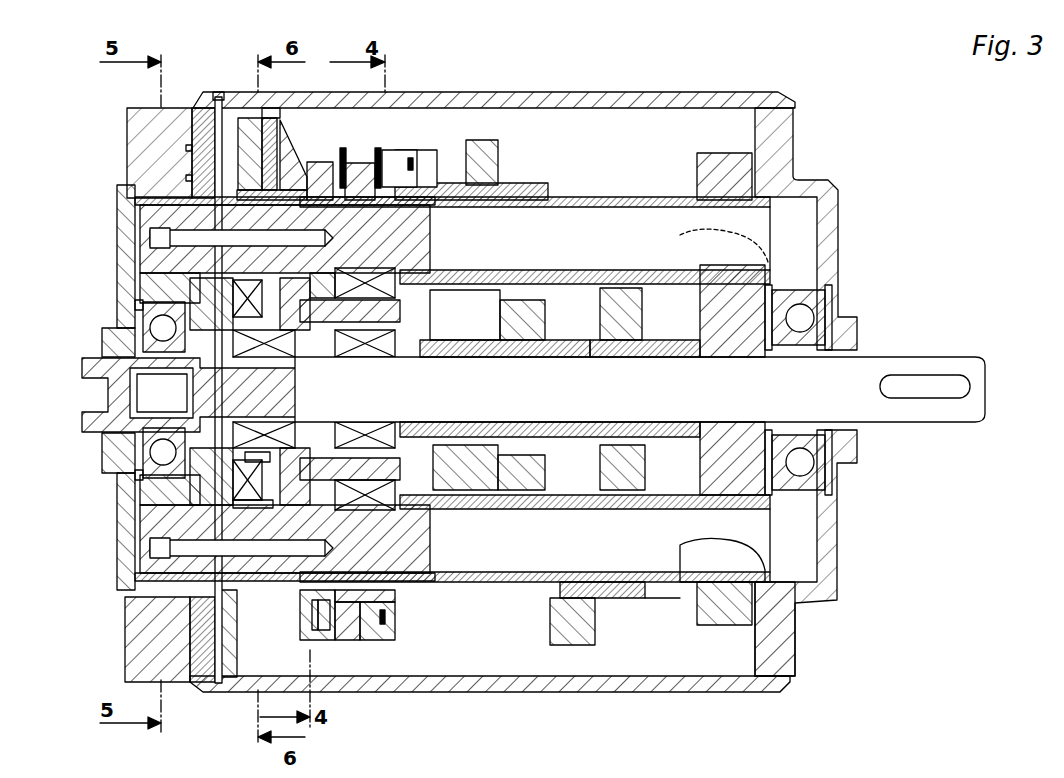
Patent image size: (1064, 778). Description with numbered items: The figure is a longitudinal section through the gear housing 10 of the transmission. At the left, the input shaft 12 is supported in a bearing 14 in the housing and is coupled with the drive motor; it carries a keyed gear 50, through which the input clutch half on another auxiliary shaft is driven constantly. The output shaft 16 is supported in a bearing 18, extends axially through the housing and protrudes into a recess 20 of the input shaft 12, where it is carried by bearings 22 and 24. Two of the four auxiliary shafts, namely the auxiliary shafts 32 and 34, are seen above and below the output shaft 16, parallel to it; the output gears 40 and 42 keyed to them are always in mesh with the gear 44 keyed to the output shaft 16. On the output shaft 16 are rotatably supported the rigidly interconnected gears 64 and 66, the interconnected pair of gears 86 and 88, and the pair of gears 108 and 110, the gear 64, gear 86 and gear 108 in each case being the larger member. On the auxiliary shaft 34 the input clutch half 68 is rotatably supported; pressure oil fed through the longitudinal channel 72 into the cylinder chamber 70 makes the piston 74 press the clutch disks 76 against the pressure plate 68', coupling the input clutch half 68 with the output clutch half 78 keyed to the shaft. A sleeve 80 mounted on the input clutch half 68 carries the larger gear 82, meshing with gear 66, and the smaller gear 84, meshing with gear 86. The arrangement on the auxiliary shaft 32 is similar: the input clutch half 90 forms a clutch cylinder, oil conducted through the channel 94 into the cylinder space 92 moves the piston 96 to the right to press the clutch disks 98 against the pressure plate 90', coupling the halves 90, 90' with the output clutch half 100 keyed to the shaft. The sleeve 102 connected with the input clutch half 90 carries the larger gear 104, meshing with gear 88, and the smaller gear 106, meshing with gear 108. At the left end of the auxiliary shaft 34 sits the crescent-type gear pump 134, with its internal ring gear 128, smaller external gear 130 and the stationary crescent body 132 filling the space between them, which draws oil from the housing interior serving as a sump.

The gear housing 10 is at (728, 677).
The input shaft 12 is at (110, 420).
The bearing 14 is at (157, 455).
The output shaft 16 is at (887, 367).
The bearing 18 is at (802, 313).
The recess 20 is at (175, 390).
The bearing 22 is at (118, 358).
The bearing 24 is at (235, 500).
The auxiliary shaft 32 is at (675, 542).
The auxiliary shaft 34 is at (783, 232).
The output gear 40 is at (732, 607).
The output gear 42 is at (728, 177).
The gear 44 is at (728, 447).
The gear 50 is at (245, 460).
The gear 64 is at (445, 470).
The gear 66 is at (483, 440).
The input clutch half 68 is at (237, 277).
The pressure plate 68' is at (406, 153).
The cylinder chamber 70 is at (255, 120).
The channel 72 is at (230, 238).
The piston 74 is at (325, 183).
The clutch disks 76 is at (357, 167).
The output clutch half 78 is at (390, 160).
The sleeve 80 is at (440, 197).
The gear 82 is at (482, 163).
The gear 84 is at (518, 183).
The gear 86 is at (535, 315).
The gear 88 is at (577, 350).
The input clutch half 90 is at (291, 615).
The pressure plate 90' is at (405, 678).
The cylinder space 92 is at (315, 625).
The channel 94 is at (235, 548).
The piston 96 is at (322, 628).
The clutch disks 98 is at (350, 607).
The output clutch half 100 is at (420, 603).
The sleeve 102 is at (625, 590).
The gear 104 is at (572, 625).
The gear 106 is at (610, 602).
The gear 108 is at (620, 313).
The gear 110 is at (662, 347).
The internal ring gear 128 is at (162, 110).
The external gear 130 is at (188, 178).
The body 132 is at (188, 148).
The gear pump 134 is at (310, 177).